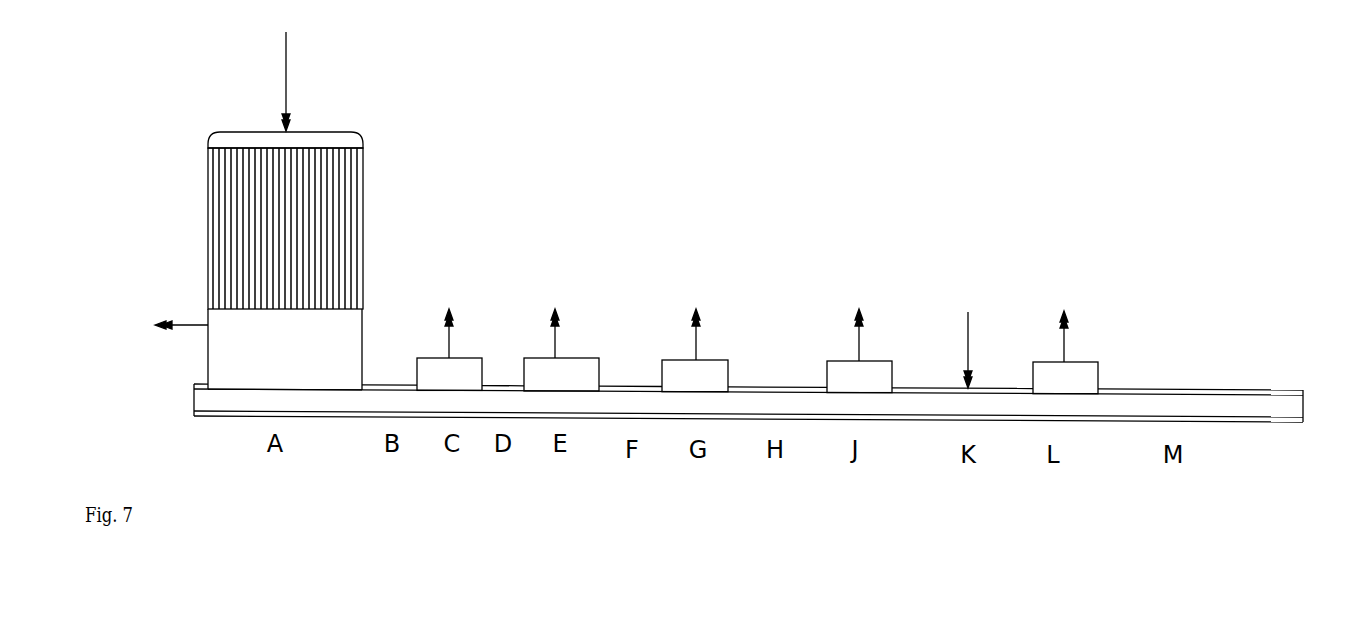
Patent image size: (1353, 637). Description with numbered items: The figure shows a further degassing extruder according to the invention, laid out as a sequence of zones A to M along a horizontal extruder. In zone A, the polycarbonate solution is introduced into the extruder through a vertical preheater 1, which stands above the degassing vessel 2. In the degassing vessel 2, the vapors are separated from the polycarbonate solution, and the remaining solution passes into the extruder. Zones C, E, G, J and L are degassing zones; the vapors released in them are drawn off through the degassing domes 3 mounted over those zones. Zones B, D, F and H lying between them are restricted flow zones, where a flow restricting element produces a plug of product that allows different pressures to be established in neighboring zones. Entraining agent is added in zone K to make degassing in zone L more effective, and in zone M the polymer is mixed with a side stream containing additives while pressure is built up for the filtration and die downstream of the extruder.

The vertical preheater 1 is at (277, 220).
The degassing vessel 2 is at (285, 349).
The degassing domes 3 is at (757, 376).